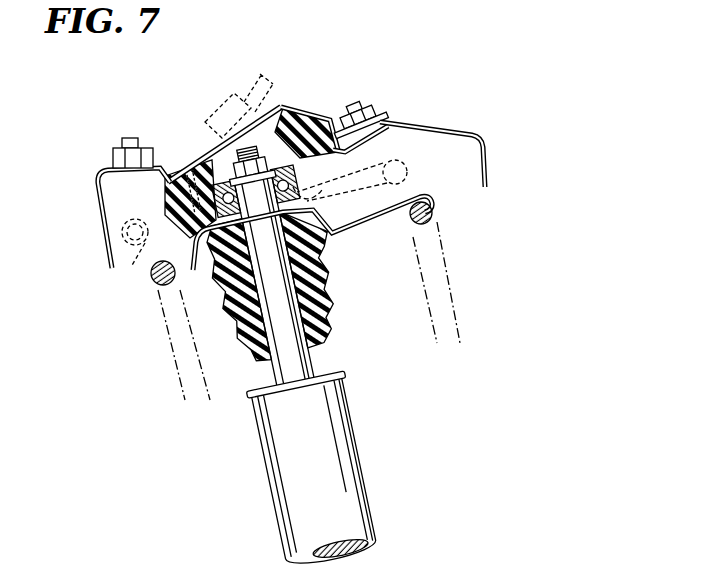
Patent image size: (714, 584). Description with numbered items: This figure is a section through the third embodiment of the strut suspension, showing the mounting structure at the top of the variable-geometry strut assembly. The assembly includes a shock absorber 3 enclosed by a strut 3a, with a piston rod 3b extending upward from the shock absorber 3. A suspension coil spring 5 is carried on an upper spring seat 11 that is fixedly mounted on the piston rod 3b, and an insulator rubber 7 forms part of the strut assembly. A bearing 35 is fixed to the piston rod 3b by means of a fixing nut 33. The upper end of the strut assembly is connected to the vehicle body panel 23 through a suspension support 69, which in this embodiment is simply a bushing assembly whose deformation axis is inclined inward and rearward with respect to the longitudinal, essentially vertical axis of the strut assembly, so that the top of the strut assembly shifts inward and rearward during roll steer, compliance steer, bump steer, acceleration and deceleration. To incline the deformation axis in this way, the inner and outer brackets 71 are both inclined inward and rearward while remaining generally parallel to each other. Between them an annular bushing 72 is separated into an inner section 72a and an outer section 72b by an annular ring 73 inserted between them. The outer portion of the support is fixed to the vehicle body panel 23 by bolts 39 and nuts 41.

The shock absorber 3 is at (358, 428).
The strut 3a is at (345, 497).
The piston rod 3b is at (305, 366).
The suspension coil spring 5 is at (452, 292).
The insulator rubber 7 is at (312, 288).
The upper spring seat 11 is at (382, 222).
The vehicle body panel 23 is at (463, 128).
The fixing nut 33 is at (247, 167).
The bearing 35 is at (300, 190).
The bolt 39 is at (363, 143).
The nut 41 is at (367, 113).
The suspension support 69 is at (319, 108).
The inner and outer brackets 71 is at (290, 106).
The annular bushing 72 is at (177, 173).
The inner section of annular bushing 72a is at (194, 270).
The outer section of annular bushing 72b is at (177, 222).
The annular ring 73 is at (272, 128).